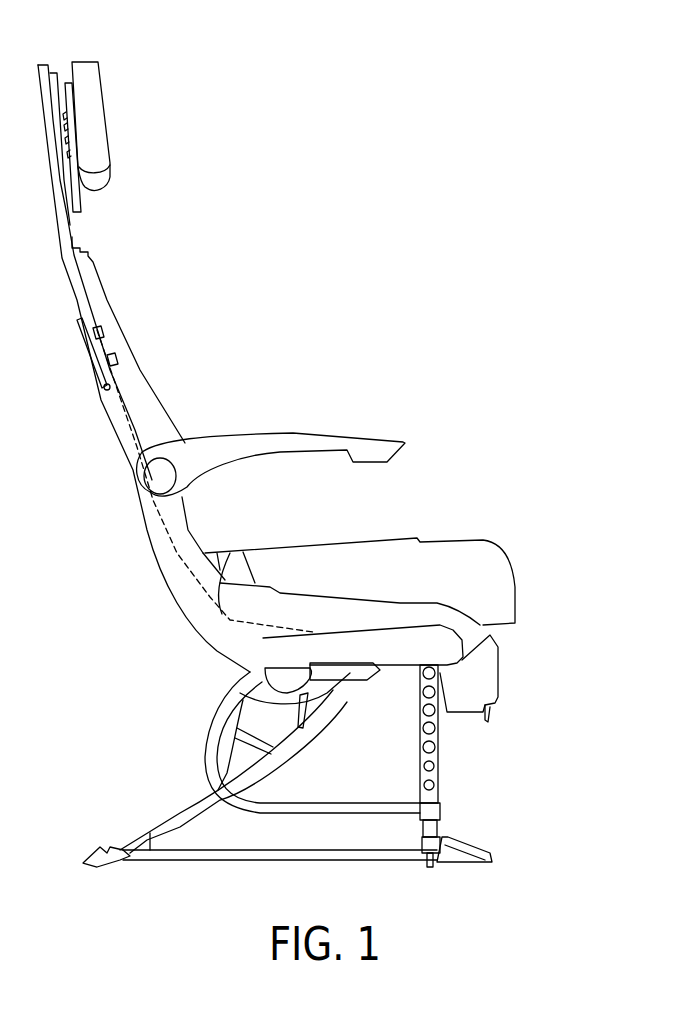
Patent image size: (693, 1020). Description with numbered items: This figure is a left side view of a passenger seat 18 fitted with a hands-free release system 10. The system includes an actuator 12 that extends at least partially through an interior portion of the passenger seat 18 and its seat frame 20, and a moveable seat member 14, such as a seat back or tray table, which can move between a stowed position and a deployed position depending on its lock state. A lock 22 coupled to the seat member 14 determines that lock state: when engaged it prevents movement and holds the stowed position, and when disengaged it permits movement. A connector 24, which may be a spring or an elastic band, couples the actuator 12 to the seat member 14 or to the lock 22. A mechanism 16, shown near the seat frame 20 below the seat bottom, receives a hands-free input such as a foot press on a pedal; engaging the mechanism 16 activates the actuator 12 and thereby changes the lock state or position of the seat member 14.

The hands-free release system 10 is at (168, 556).
The actuator 12 is at (240, 552).
The seat member 14 is at (90, 348).
The mechanism 16 is at (247, 693).
The passenger seat 18 is at (333, 76).
The seat frame 20 is at (438, 758).
The lock 22 is at (100, 332).
The connector 24 is at (113, 360).